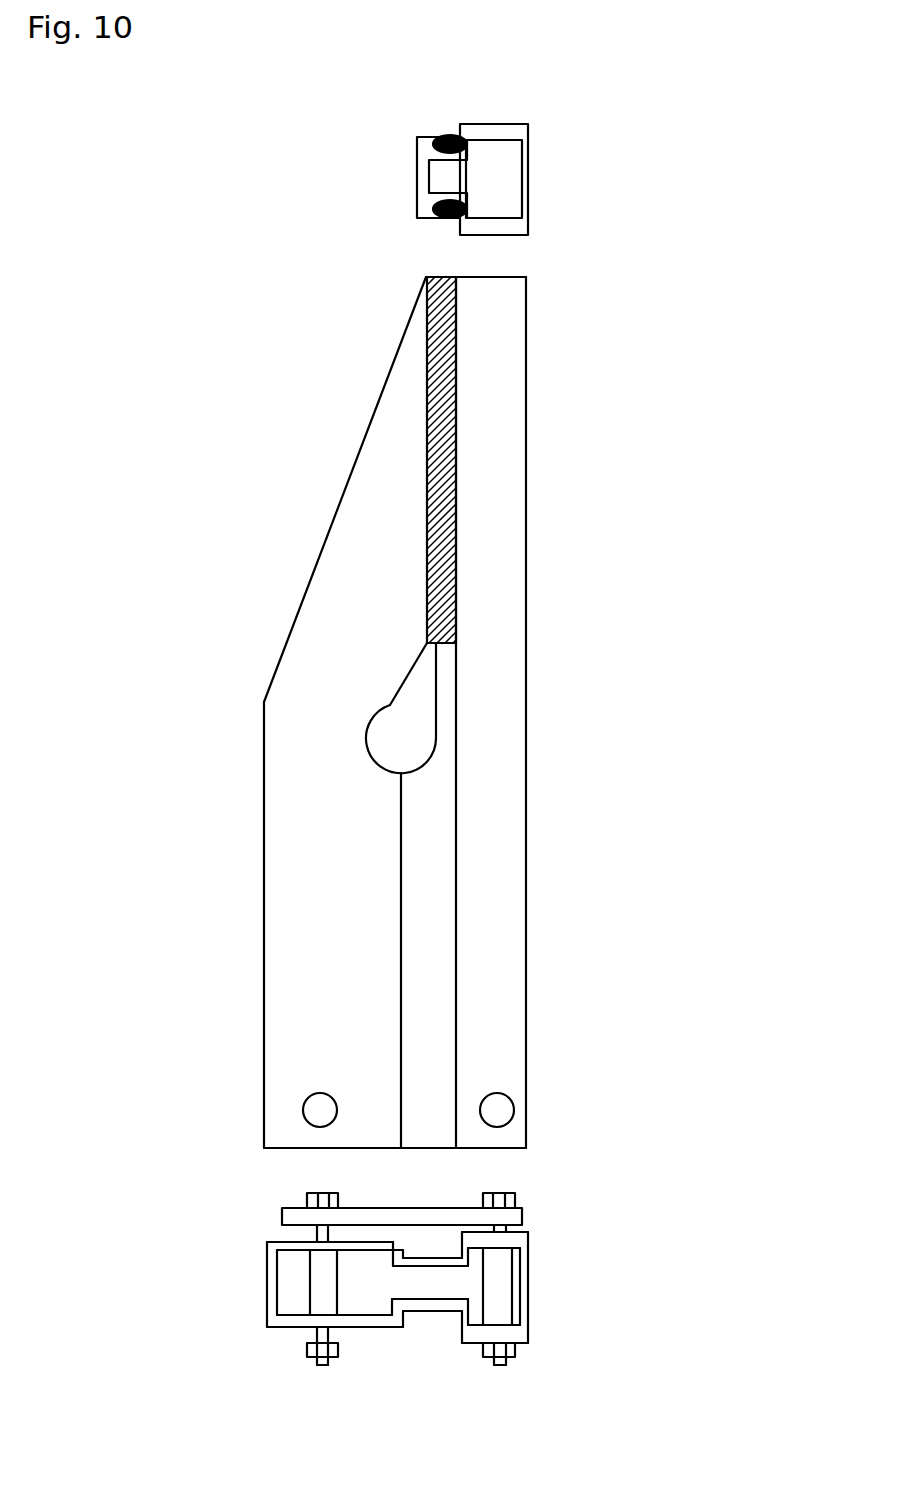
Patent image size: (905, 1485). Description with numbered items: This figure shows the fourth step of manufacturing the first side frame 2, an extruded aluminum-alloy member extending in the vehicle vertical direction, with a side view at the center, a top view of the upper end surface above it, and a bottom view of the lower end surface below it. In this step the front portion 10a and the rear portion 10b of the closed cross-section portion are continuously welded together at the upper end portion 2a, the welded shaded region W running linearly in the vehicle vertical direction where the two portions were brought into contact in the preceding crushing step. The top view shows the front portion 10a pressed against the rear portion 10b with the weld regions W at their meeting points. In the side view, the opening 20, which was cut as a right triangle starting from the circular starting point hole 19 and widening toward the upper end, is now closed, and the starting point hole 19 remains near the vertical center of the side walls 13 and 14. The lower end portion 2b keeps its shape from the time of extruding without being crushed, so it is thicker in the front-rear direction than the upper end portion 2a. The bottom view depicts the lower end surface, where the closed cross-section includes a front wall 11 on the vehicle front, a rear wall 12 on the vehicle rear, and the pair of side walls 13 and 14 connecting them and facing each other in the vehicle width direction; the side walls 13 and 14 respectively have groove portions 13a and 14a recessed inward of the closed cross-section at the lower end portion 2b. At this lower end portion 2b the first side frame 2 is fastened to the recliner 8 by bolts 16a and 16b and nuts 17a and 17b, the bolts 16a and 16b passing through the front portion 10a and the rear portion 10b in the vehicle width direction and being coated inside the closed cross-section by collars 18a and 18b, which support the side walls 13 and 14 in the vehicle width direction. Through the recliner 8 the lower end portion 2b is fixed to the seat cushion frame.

The first side frame 2 is at (320, 698).
The upper end portion 2a is at (427, 277).
The lower end portion 2b is at (265, 1143).
The recliner 8 is at (282, 1216).
The front portion 10a is at (417, 178).
The rear portion 10b is at (528, 175).
The front wall 11 is at (267, 1298).
The rear wall 12 is at (528, 1282).
The side wall 13 is at (409, 1343).
The groove portion 13a is at (432, 1312).
The side wall 14 is at (412, 1212).
The groove portion 14a is at (437, 1257).
The bolt 16a is at (315, 1193).
The bolt 16b is at (515, 1193).
The nut 17a is at (307, 1349).
The nut 17b is at (515, 1352).
The collar 18a is at (310, 1267).
The collar 18b is at (512, 1258).
The starting point hole 19 is at (366, 727).
The opening 20 is at (430, 412).
The shaded region W is at (446, 136).